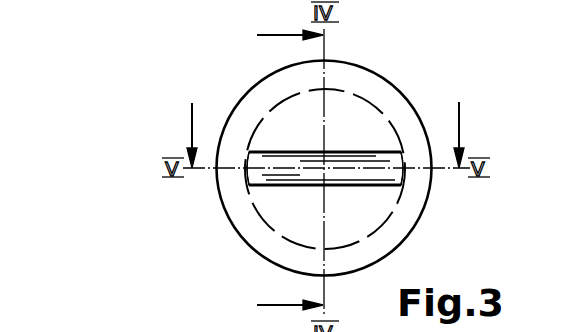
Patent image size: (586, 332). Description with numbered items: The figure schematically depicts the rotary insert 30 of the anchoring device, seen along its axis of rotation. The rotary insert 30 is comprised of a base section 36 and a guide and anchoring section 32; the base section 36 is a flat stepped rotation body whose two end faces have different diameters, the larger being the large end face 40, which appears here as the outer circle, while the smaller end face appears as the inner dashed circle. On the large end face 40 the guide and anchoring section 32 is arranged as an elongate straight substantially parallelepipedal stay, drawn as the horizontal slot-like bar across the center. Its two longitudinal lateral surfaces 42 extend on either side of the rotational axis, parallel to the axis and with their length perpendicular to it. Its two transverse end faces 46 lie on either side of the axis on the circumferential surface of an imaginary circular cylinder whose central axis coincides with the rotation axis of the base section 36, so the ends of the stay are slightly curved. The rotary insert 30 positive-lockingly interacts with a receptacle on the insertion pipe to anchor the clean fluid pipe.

The rotary insert 30 is at (150, 331).
The guide and anchoring section 32 is at (397, 158).
The base section 36 is at (280, 128).
The large end face 40 is at (393, 232).
The longitudinal lateral surfaces 42 is at (362, 150).
The transverse end faces 46 is at (245, 177).